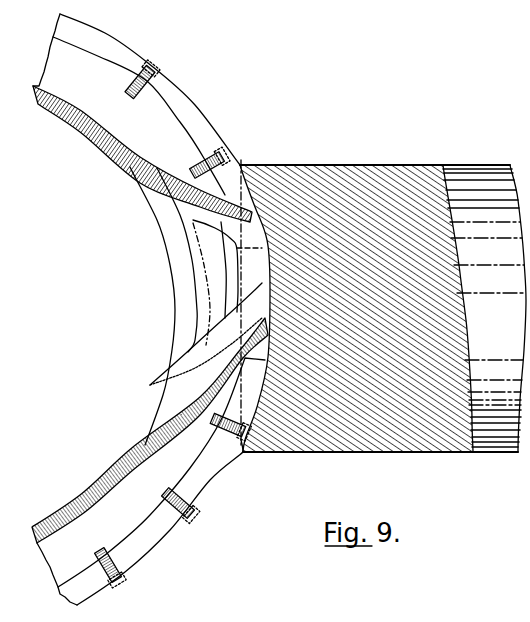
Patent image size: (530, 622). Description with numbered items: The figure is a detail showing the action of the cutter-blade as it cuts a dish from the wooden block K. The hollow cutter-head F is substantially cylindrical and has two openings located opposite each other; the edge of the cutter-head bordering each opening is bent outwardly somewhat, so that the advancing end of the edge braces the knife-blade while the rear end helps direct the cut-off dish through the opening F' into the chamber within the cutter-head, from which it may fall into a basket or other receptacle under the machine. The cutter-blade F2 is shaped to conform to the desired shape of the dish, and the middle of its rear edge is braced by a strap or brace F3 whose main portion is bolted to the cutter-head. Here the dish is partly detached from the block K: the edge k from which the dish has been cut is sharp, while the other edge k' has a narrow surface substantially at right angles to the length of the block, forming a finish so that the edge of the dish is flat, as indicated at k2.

The hollow cutter-head F is at (142, 154).
The opening F' is at (178, 260).
The cutter-blade F2 is at (270, 304).
The strap or brace F3 is at (193, 522).
The edge of the block k is at (247, 461).
The other edge of the block k' is at (245, 287).
The flat edge of the dish k2 is at (172, 358).
The wooden block K is at (383, 308).